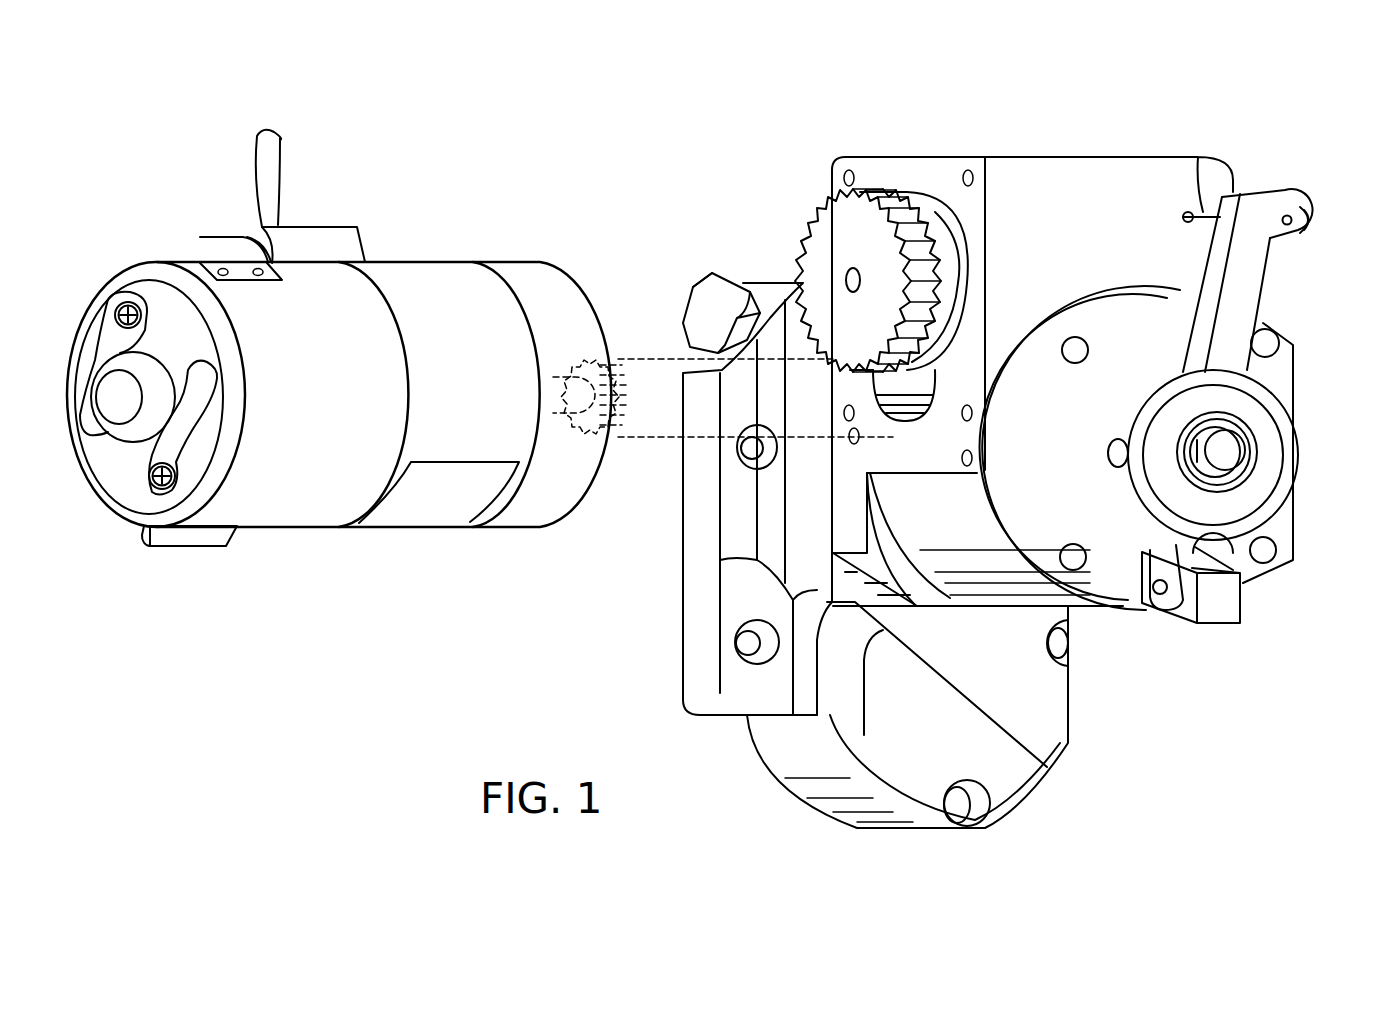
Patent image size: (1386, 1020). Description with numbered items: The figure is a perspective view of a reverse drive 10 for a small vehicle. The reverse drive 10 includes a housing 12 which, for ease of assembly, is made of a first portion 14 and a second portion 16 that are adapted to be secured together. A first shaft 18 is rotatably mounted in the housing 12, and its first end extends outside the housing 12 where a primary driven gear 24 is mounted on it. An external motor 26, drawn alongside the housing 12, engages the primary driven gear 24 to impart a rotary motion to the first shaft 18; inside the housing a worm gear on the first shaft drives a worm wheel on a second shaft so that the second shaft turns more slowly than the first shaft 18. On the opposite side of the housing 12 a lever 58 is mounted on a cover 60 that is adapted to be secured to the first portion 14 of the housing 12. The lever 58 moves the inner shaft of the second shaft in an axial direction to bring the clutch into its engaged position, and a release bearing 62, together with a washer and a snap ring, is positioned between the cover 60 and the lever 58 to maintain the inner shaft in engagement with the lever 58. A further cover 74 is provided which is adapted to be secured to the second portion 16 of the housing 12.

The reverse drive 10 is at (697, 214).
The housing 12 is at (1030, 157).
The first portion 14 is at (1108, 200).
The second portion 16 is at (1050, 697).
The first shaft 18 is at (846, 281).
The primary driven gear 24 is at (833, 212).
The external motor 26 is at (437, 262).
The lever 58 is at (1268, 212).
The cover 60 is at (1113, 580).
The release bearing 62 is at (1253, 493).
The cover 74 is at (1200, 170).